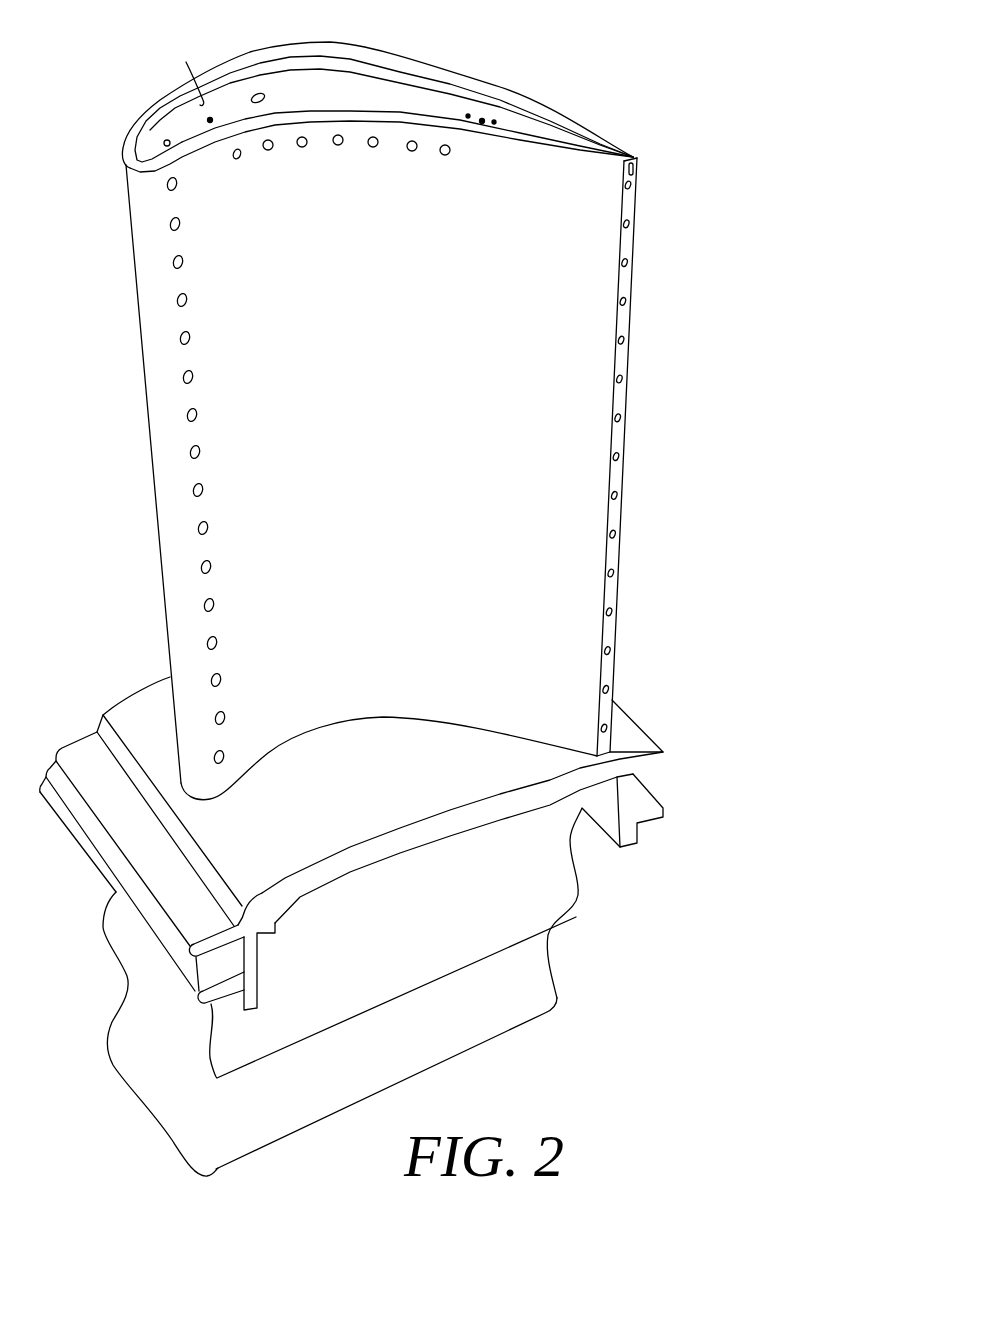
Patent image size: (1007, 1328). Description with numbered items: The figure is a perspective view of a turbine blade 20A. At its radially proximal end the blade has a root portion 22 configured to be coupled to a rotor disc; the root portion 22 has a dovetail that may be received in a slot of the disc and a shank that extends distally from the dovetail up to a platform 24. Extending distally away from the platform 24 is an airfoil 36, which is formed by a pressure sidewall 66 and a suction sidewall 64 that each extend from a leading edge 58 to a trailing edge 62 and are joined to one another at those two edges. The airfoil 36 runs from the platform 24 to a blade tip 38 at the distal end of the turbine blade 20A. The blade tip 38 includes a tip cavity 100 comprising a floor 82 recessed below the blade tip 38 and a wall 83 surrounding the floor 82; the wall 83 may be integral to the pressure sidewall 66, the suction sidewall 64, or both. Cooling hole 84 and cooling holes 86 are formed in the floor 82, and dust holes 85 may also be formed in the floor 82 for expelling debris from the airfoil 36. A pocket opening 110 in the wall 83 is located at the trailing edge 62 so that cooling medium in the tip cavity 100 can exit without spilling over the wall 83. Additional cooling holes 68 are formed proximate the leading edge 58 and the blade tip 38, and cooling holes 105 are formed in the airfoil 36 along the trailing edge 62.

The turbine blade 20A is at (449, 592).
The root portion 22 is at (649, 989).
The platform 24 is at (373, 782).
The airfoil 36 is at (386, 404).
The blade tip 38 is at (427, 67).
The leading edge 58 is at (110, 153).
The trailing edge 62 is at (667, 434).
The suction sidewall 64 is at (360, 52).
The pressure sidewall 66 is at (277, 118).
The cooling holes 68 is at (222, 456).
The floor 82 is at (187, 71).
The wall 83 is at (303, 63).
The cooling hole 84 is at (167, 140).
The dust holes 85 is at (259, 95).
The cooling holes 86 is at (482, 121).
The tip cavity 100 is at (348, 90).
The cooling holes 105 is at (630, 263).
The pocket opening 110 is at (685, 157).